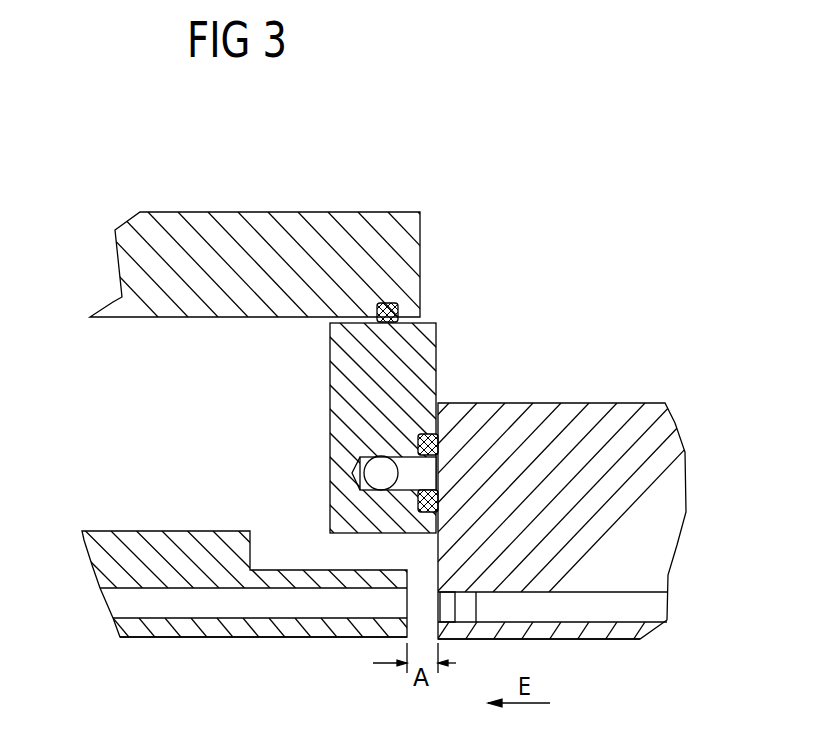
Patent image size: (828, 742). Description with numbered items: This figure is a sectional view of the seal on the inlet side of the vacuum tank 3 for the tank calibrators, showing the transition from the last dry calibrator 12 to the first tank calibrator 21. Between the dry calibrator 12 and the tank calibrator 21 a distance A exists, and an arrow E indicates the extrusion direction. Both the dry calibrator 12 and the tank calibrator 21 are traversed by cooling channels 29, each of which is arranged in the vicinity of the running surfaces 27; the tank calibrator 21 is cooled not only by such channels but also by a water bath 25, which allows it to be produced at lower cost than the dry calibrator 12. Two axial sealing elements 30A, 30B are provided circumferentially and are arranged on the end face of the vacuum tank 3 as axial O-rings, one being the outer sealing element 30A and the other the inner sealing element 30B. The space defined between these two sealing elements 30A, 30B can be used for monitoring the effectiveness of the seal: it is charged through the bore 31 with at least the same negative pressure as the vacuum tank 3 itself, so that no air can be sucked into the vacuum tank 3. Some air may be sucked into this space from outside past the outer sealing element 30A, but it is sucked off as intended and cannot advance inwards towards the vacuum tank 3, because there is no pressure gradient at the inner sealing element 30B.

The water bath 25 is at (143, 342).
The vacuum tank 3 is at (410, 347).
The bore 31 is at (360, 458).
The outer sealing element 30A is at (437, 434).
The inner sealing element 30B is at (438, 490).
The dry calibrator 12 is at (608, 427).
The tank calibrator 21 is at (167, 555).
The cooling channels 29 is at (262, 608).
The running surfaces 27 is at (155, 628).